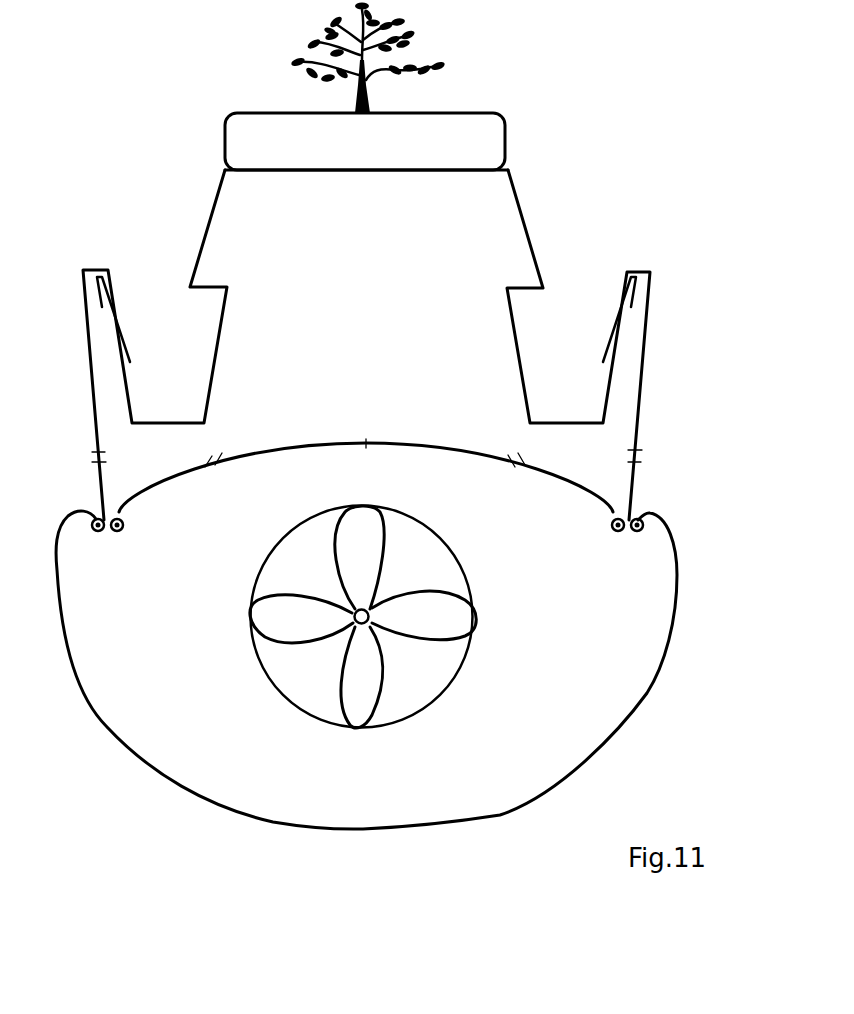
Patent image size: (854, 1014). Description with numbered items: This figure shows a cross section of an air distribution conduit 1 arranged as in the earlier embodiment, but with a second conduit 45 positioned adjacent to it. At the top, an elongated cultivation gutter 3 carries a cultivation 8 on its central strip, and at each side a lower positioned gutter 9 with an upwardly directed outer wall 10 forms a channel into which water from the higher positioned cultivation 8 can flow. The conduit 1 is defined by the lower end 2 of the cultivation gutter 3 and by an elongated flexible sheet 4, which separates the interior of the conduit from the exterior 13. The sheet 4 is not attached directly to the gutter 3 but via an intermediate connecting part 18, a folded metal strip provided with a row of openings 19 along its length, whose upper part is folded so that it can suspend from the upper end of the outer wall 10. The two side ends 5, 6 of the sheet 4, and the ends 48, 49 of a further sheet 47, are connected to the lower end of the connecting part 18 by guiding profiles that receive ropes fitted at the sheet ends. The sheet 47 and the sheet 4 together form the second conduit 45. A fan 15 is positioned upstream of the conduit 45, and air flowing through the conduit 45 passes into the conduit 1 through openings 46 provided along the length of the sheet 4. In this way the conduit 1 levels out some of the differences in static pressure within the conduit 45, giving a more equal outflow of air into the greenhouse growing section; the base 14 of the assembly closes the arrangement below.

The air distribution conduit 1 is at (493, 220).
The lower end 2 is at (266, 173).
The cultivation gutter 3 is at (513, 182).
The flexible sheet 4 is at (557, 473).
The side end 5 is at (119, 533).
The side end 6 is at (613, 533).
The cultivation 8 is at (458, 127).
The gutter 9 is at (548, 423).
The outer wall 10 is at (608, 382).
The exterior 13 is at (375, 336).
The base 14 is at (507, 841).
The fan 15 is at (357, 710).
The connecting part 18 is at (640, 383).
The openings 19 is at (638, 452).
The second conduit 45 is at (627, 693).
The openings 46 is at (518, 460).
The sheet 47 is at (665, 660).
The end 48 is at (100, 533).
The end 49 is at (633, 533).